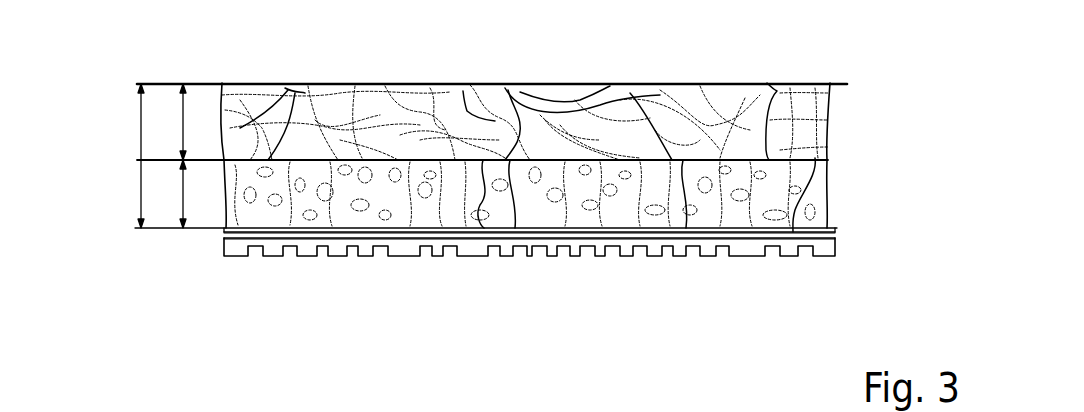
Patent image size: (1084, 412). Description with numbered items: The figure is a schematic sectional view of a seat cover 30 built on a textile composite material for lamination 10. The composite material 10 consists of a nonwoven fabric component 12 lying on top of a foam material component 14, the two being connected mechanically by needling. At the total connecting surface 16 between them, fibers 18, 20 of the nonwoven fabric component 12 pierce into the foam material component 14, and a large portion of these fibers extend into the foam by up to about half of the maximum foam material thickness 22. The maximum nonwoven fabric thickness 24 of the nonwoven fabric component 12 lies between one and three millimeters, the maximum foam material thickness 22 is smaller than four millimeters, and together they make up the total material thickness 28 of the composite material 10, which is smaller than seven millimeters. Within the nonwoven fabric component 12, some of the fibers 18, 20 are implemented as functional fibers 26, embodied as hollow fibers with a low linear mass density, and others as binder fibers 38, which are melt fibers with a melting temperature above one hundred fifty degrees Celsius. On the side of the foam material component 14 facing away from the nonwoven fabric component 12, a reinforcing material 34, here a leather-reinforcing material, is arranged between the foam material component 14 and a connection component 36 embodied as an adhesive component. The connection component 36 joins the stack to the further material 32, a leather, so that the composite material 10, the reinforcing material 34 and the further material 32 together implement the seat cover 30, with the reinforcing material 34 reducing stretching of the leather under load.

The textile composite material for lamination 10 is at (495, 206).
The nonwoven fabric component 12 is at (846, 110).
The foam material component 14 is at (846, 204).
The total connecting surface 16 is at (820, 158).
The fibers 18 is at (529, 289).
The fibers 20 is at (529, 289).
The maximum foam material thickness 22 is at (183, 202).
The maximum nonwoven fabric thickness 24 is at (183, 120).
The functional fiber 26 is at (688, 233).
The total material thickness 28 is at (141, 160).
The seat cover 30 is at (184, 312).
The further material 32 is at (306, 248).
The reinforcing material 34 is at (225, 232).
The connection component 36 is at (458, 292).
The binder fiber 38 is at (530, 233).